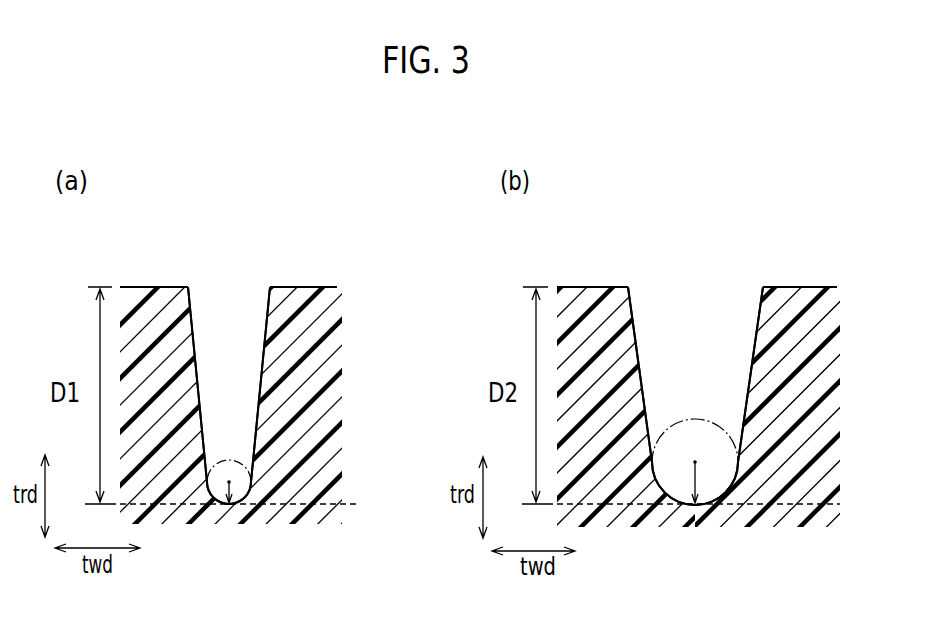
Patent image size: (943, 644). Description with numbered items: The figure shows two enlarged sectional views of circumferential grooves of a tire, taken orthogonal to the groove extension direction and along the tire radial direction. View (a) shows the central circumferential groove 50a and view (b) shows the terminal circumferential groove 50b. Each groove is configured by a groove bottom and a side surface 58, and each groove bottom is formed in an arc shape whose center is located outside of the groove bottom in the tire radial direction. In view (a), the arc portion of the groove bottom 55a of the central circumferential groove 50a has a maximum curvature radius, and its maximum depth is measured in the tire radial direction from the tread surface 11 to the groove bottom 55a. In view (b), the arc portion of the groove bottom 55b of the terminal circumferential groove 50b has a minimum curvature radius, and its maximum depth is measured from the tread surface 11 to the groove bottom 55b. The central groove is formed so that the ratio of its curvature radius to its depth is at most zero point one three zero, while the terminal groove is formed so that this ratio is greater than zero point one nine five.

The tread surface 11 is at (317, 290).
The central circumferential groove 50a is at (261, 272).
The terminal circumferential groove 50b is at (729, 273).
The side surface 58 is at (196, 355).
The groove bottom 55a is at (202, 500).
The groove bottom 55b is at (666, 503).